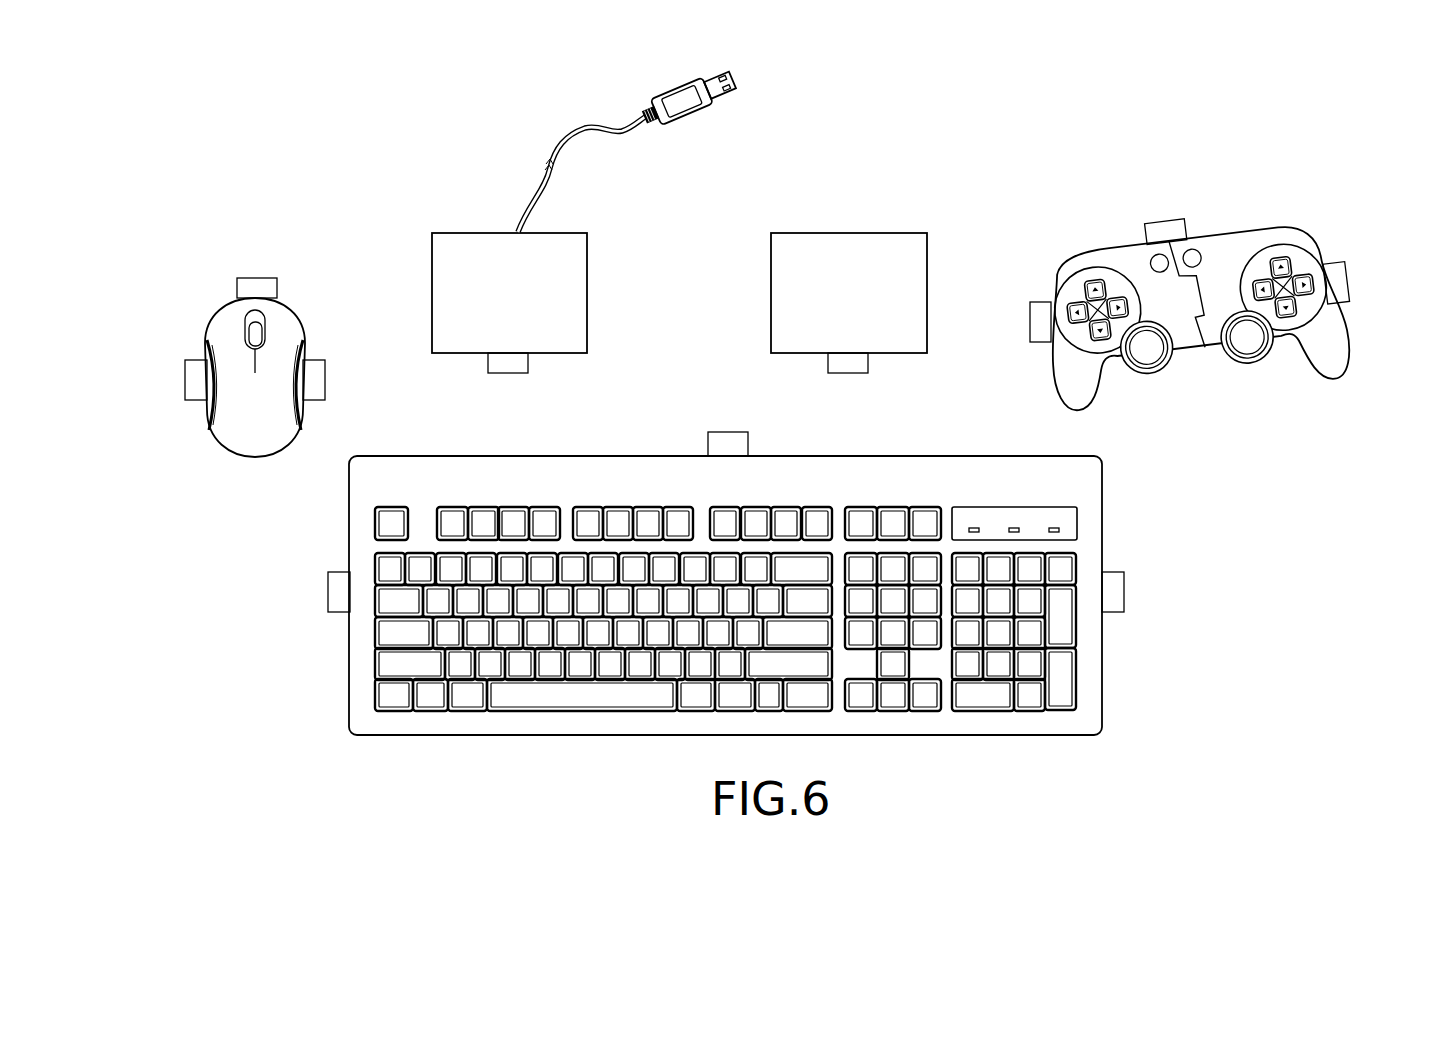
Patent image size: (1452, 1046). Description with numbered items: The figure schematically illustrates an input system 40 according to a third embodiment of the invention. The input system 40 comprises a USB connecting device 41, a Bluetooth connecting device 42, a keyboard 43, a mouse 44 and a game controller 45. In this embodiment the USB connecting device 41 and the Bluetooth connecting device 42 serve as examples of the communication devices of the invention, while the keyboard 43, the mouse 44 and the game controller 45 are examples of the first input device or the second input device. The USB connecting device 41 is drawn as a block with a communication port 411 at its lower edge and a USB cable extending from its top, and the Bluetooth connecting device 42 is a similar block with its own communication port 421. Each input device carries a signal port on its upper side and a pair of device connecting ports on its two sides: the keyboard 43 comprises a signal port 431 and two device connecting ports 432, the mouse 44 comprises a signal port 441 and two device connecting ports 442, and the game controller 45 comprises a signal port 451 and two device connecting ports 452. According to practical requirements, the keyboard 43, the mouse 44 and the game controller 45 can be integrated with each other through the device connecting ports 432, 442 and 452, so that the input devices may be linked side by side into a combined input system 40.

The input system 40 is at (1171, 120).
The USB connecting device 41 is at (468, 232).
The communication port 411 is at (508, 363).
The Bluetooth connecting device 42 is at (865, 232).
The communication port 421 is at (847, 363).
The keyboard 43 is at (967, 457).
The signal port 431 is at (735, 432).
The device connecting ports 432 is at (338, 593).
The mouse 44 is at (208, 313).
The signal port 441 is at (257, 285).
The device connecting ports 442 is at (193, 385).
The game controller 45 is at (1277, 225).
The signal port 451 is at (1180, 228).
The device connecting ports 452 is at (1038, 328).